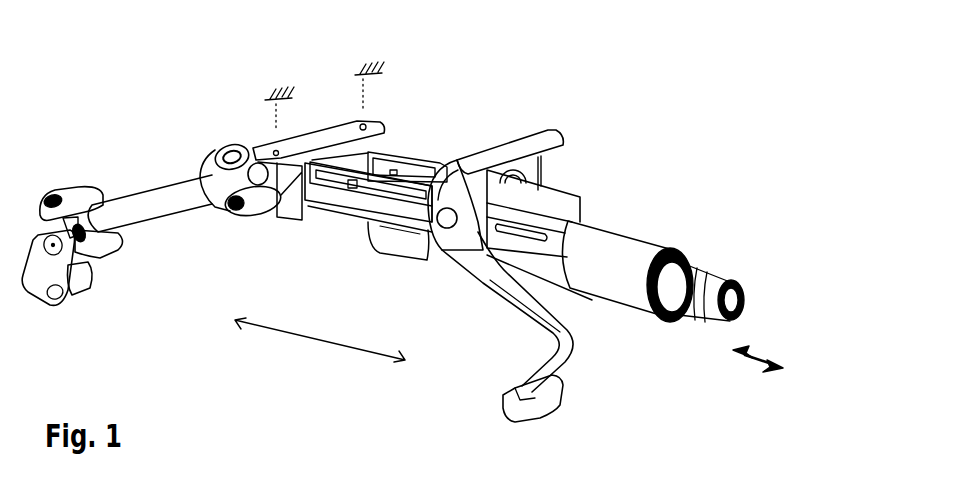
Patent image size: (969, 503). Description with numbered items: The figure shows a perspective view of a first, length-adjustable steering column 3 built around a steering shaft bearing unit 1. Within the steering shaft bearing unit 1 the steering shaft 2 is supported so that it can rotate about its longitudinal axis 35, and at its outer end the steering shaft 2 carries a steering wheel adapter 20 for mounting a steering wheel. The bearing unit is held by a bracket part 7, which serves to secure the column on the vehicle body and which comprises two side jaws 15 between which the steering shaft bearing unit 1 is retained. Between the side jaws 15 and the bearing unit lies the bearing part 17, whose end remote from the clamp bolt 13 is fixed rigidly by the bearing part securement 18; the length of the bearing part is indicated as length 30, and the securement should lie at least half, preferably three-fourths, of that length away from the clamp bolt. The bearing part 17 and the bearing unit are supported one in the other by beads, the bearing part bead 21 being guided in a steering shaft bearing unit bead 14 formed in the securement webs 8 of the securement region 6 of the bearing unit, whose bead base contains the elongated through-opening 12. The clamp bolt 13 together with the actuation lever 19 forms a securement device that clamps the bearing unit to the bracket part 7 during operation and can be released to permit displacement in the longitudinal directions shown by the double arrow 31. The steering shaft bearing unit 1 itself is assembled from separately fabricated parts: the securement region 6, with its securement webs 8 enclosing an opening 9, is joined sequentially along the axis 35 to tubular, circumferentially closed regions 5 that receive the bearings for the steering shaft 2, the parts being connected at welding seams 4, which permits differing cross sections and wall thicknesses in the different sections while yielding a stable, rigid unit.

The steering shaft bearing unit 1 is at (622, 240).
The steering shaft 2 is at (133, 213).
The steering column 3 is at (720, 125).
The welding seams 4 is at (383, 225).
The circumferentially closed region 5 is at (375, 233).
The securement region 6 is at (523, 230).
The bracket part 7 is at (530, 140).
The securement webs 8 is at (608, 218).
The opening 9 is at (582, 250).
The through-opening 12 is at (477, 253).
The clamp bolt 13 is at (430, 245).
The steering shaft bearing unit bead 14 is at (537, 263).
The side jaws 15 is at (459, 180).
The bearing part 17 is at (268, 213).
The bearing part securement 18 is at (320, 130).
The actuation lever 19 is at (577, 350).
The steering wheel adapter 20 is at (715, 290).
The bearing part bead 21 is at (378, 166).
The length of the bearing part 30 is at (317, 350).
The double arrow / displacement directions 31 is at (752, 370).
The longitudinal axis 35 is at (777, 315).